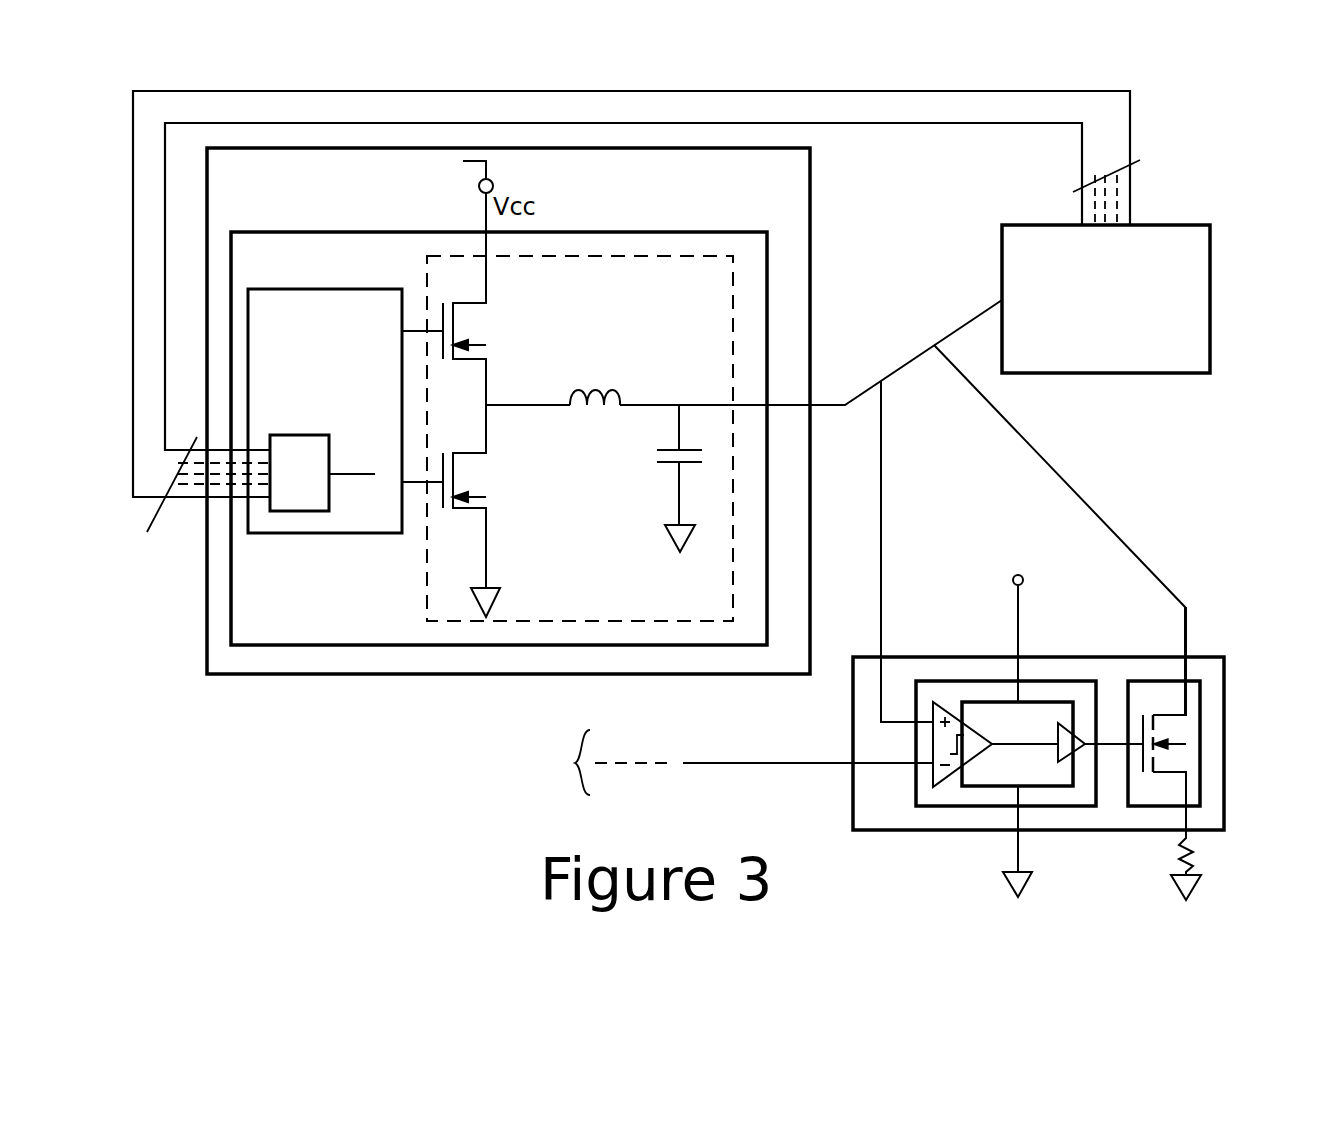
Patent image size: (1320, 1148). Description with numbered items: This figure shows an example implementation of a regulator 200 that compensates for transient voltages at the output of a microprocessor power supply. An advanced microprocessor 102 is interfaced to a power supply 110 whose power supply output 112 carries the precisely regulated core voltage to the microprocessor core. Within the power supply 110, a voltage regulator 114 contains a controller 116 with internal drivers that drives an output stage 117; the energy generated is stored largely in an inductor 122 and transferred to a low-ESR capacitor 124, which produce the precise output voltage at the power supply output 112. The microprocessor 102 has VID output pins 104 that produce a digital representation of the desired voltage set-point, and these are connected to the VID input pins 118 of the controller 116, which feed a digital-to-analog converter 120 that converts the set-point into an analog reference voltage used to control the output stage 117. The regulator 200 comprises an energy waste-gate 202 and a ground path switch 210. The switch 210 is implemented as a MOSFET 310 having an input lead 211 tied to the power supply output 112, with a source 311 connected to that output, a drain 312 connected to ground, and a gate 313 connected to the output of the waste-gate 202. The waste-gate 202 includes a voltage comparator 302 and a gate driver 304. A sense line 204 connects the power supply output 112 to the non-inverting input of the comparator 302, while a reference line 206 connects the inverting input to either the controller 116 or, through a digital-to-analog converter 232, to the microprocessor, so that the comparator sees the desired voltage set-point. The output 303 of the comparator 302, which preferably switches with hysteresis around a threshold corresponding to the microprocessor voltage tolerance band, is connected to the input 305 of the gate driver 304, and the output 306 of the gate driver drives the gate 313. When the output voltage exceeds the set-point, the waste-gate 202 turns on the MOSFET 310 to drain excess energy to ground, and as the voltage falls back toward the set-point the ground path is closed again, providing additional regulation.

The microprocessor 102 is at (1172, 376).
The VID output pins 104 is at (1074, 190).
The power supply 110 is at (250, 677).
The power supply output 112 is at (843, 400).
The voltage regulator 114 is at (668, 230).
The controller 116 is at (285, 289).
The output stage 117 is at (607, 620).
The VID input pins 118 is at (148, 526).
The digital-to-analog converter 120 is at (287, 537).
The inductor 122 is at (593, 380).
The capacitor 124 is at (665, 465).
The regulator 200 is at (1226, 670).
The energy waste-gate 202 is at (1087, 728).
The sense line input lead 204 is at (905, 680).
The reference line input lead 206 is at (880, 765).
The ground path switch 210 is at (1206, 746).
The input lead 211 is at (1187, 665).
The digital-to-analog converter 232 is at (544, 763).
The voltage comparator 302 is at (933, 787).
The output of comparator 303 is at (993, 745).
The gate driver 304 is at (1087, 750).
The input of gate driver 305 is at (1052, 735).
The output of gate driver 306 is at (1100, 753).
The MOSFET 310 is at (1188, 770).
The source 311 is at (1188, 713).
The drain 312 is at (1188, 795).
The gate 313 is at (1127, 765).